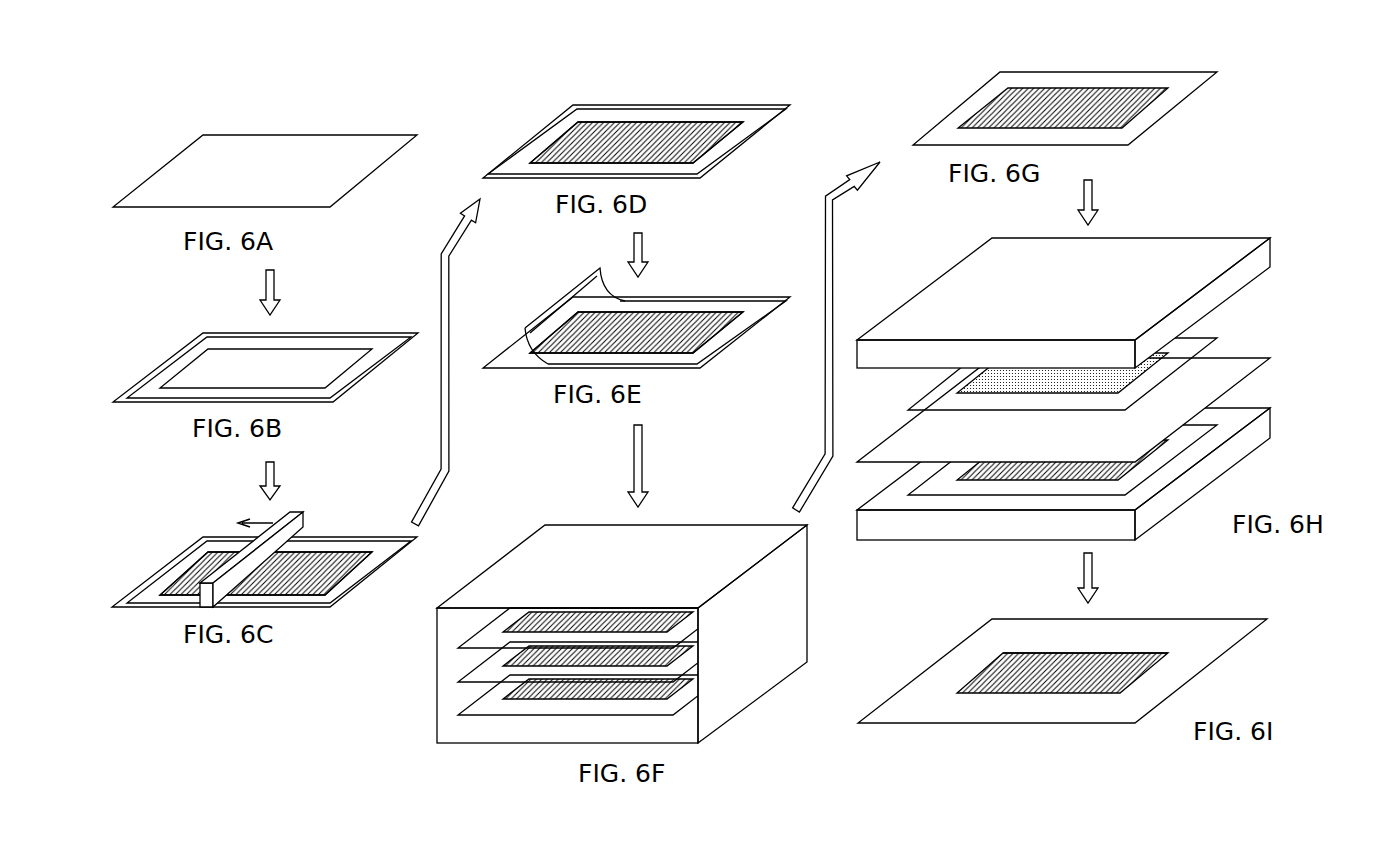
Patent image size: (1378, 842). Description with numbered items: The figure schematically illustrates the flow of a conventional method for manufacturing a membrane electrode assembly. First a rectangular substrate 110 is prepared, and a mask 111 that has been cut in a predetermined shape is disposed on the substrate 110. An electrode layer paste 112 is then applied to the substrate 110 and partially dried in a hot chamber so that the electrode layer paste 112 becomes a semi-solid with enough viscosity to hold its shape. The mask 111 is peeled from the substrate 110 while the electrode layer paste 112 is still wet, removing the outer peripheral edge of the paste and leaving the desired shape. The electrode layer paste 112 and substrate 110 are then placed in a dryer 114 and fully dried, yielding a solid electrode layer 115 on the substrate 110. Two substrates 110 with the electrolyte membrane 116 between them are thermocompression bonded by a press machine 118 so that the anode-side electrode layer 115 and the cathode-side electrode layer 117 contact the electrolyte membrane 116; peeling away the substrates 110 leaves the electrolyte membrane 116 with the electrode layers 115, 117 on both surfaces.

In FIG. 6A, the substrate 110 is at (181, 175).
In FIG. 6B, the substrate 110 is at (125, 391).
In FIG. 6C, the substrate 110 is at (122, 603).
In FIG. 6D, the substrate 110 is at (520, 148).
In FIG. 6E, the substrate 110 is at (508, 358).
In FIG. 6F, the substrate 110 is at (483, 640).
In FIG. 6G, the substrate 110 is at (963, 115).
In FIG. 6H, the substrate 110 is at (940, 397).
In FIG. 6B, the mask 111 is at (185, 363).
In FIG. 6C, the mask 111 is at (175, 572).
In FIG. 6D, the mask 111 is at (570, 127).
In FIG. 6E, the mask 111 is at (587, 277).
In FIG. 6C, the electrode layer paste 112 is at (202, 541).
In FIG. 6D, the electrode layer paste 112 is at (648, 127).
In FIG. 6E, the electrode layer paste 112 is at (695, 322).
In FIG. 6F, the electrode layer paste 112 is at (600, 617).
In FIG. 6F, the dryer 114 is at (540, 541).
In FIG. 6G, the electrode layer 115 is at (1087, 98).
In FIG. 6H, the electrode layer 115 is at (1010, 472).
In FIG. 6I, the electrode layer 115 is at (1053, 685).
In FIG. 6H, the electrolyte membrane 116 is at (1247, 363).
In FIG. 6I, the electrolyte membrane 116 is at (1215, 645).
In FIG. 6H, the electrode layer 117 is at (1035, 377).
In FIG. 6I, the electrode layer 117 is at (1130, 652).
In FIG. 6H, the press machine 118 is at (1263, 253).